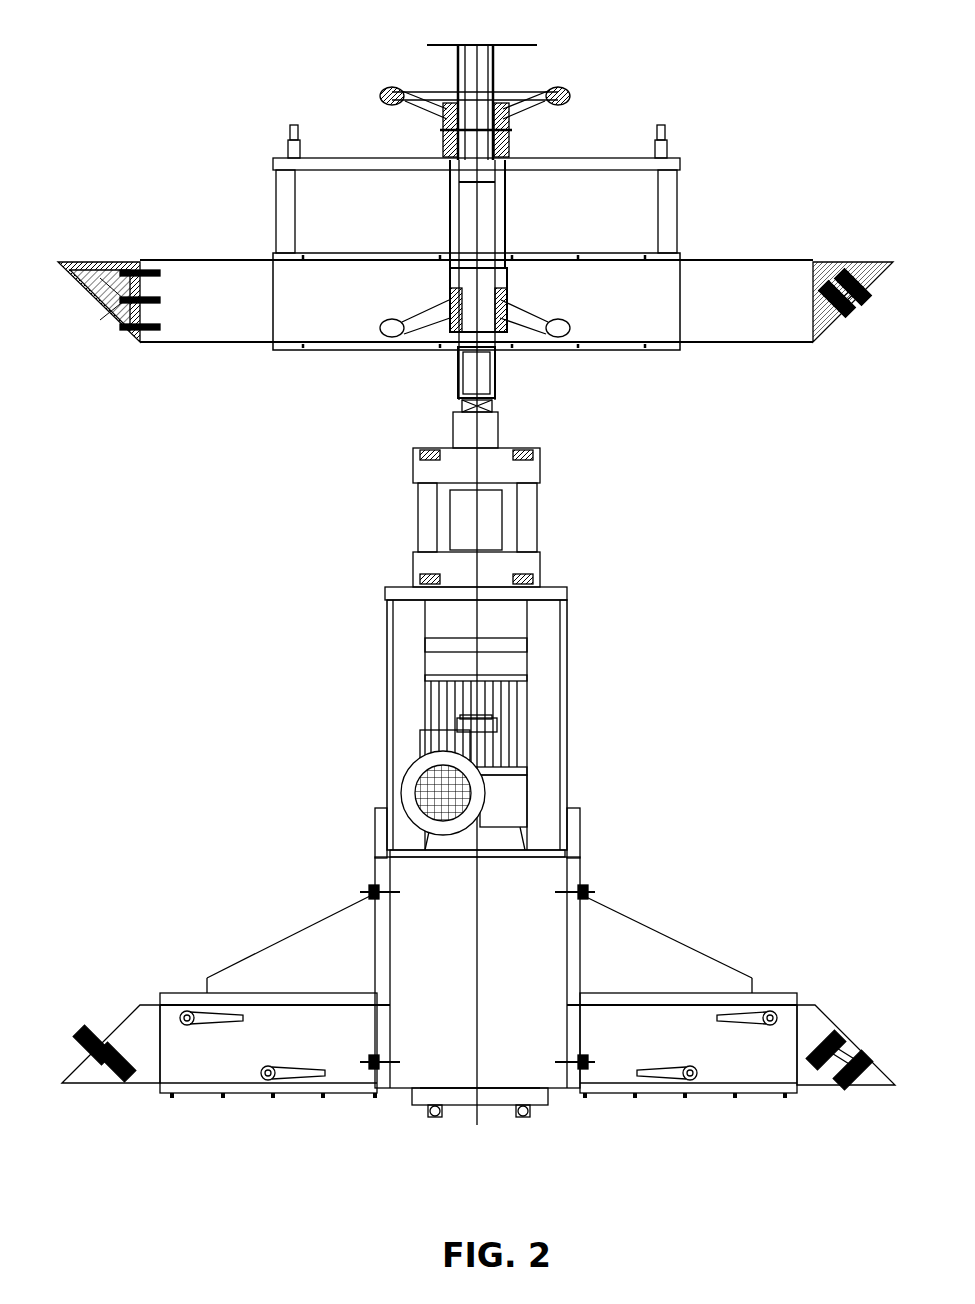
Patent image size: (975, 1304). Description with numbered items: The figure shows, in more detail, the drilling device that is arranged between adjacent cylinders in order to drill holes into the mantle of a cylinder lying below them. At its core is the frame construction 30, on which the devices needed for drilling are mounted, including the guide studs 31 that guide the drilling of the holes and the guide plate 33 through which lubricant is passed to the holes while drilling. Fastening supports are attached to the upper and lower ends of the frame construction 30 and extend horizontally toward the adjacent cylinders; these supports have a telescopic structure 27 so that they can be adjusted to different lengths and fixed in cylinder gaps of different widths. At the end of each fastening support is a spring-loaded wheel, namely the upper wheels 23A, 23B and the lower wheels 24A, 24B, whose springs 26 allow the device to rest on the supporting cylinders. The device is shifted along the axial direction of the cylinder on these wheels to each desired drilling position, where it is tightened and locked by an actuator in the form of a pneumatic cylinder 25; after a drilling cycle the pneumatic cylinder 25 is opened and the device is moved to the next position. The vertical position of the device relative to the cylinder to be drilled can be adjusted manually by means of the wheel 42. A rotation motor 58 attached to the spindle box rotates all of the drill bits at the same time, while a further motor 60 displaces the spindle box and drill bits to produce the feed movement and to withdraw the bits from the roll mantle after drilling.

The wheel 42 is at (560, 87).
The pneumatic cylinder 25 is at (483, 216).
The spring-loaded wheel 23A is at (97, 300).
The spring-loaded wheel 23B is at (840, 330).
The springs 26 is at (160, 273).
The telescopic structure 27 is at (325, 350).
The frame construction 30 is at (550, 613).
The motor 58 is at (418, 768).
The motor 60 is at (510, 733).
The spring-loaded wheel 24A is at (97, 1035).
The spring-loaded wheel 24B is at (838, 1018).
The guide studs 31 is at (428, 1118).
The guide plate 33 is at (477, 1120).